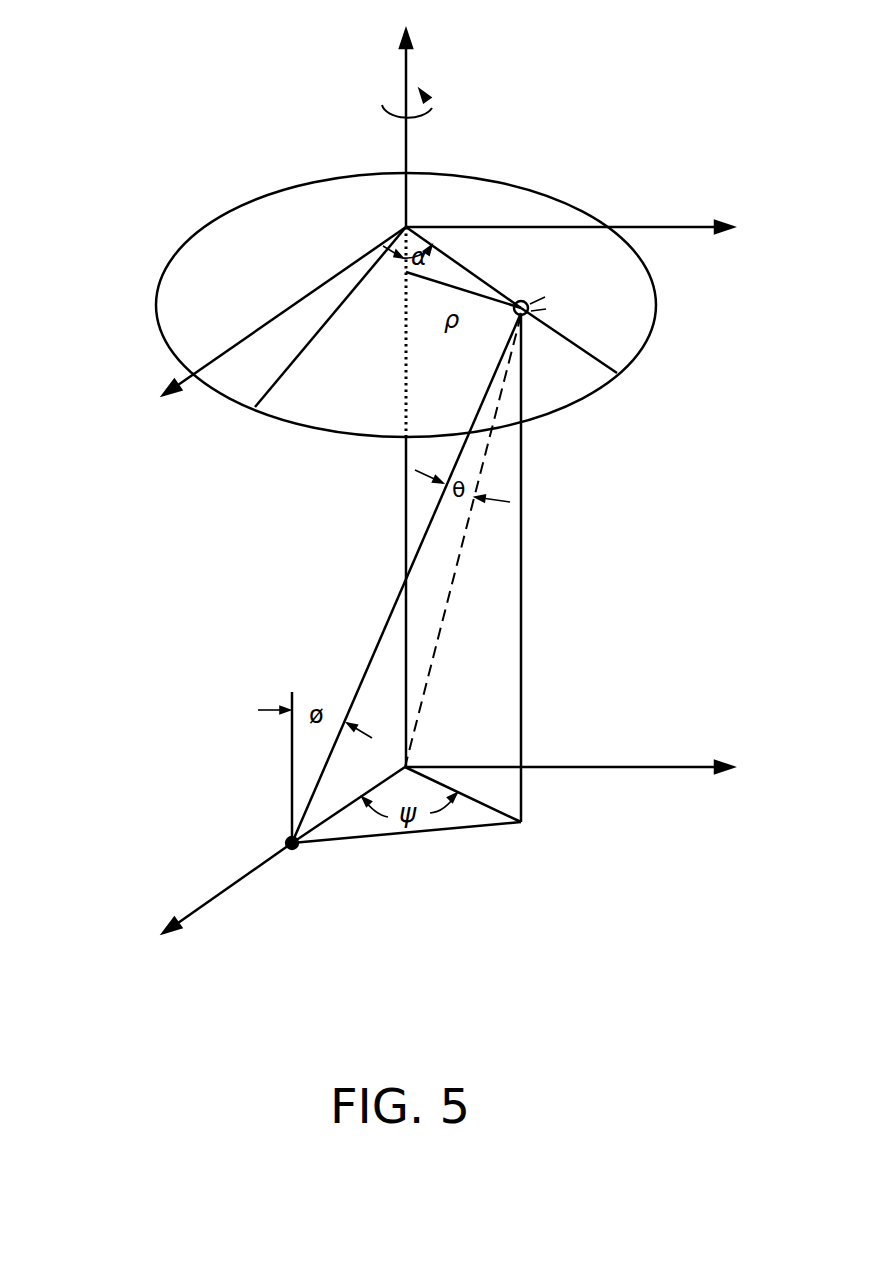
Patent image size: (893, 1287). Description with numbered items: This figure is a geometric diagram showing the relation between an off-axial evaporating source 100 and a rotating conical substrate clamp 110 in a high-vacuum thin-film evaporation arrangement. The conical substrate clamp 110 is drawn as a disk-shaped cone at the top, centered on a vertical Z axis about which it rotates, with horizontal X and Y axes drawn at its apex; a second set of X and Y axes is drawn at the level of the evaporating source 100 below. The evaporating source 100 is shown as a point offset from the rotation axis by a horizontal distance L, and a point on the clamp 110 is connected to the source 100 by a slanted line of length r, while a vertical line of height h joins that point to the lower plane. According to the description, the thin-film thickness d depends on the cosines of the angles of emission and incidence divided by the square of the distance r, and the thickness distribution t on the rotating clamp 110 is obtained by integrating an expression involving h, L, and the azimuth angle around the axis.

The conical substrate clamp 110 is at (222, 247).
The evaporating source 100 is at (298, 848).
The X axis X is at (278, 602).
The Y axis Y is at (583, 500).
The Z axis Z is at (402, 397).
The distance L is at (348, 804).
The range r is at (406, 578).
The height h is at (533, 568).